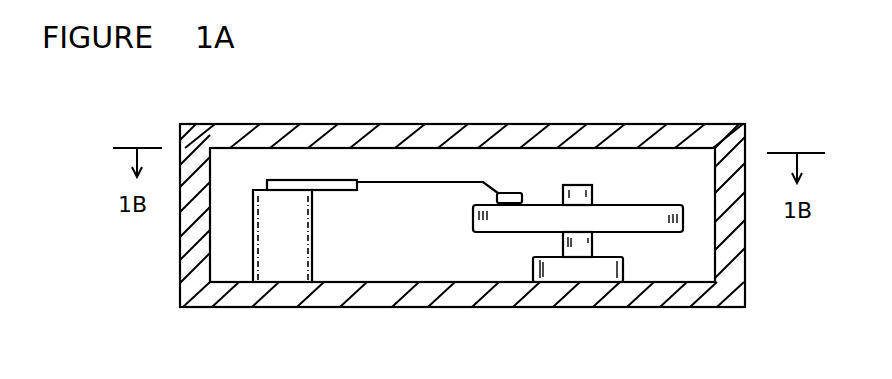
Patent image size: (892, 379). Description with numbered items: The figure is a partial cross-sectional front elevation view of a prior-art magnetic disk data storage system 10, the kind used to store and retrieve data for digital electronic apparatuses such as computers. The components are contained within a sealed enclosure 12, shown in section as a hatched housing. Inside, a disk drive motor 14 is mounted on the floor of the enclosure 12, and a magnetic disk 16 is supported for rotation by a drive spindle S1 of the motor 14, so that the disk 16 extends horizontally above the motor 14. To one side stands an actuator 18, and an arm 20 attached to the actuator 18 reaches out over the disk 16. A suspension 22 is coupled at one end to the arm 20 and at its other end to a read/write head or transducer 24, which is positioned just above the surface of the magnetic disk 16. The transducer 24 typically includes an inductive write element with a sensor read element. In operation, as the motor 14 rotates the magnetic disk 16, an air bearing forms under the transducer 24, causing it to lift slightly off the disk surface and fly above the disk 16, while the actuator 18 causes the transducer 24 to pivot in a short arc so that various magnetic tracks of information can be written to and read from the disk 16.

The microelectromechanical device 10 is at (656, 75).
The sealed enclosure 12 is at (505, 295).
The disk drive motor 14 is at (598, 275).
The magnetic disk 16 is at (618, 217).
The actuator 18 is at (291, 247).
The arm 20 is at (332, 182).
The suspension 22 is at (417, 184).
The read/write head or transducer 24 is at (515, 192).
The drive spindle S1 is at (580, 187).